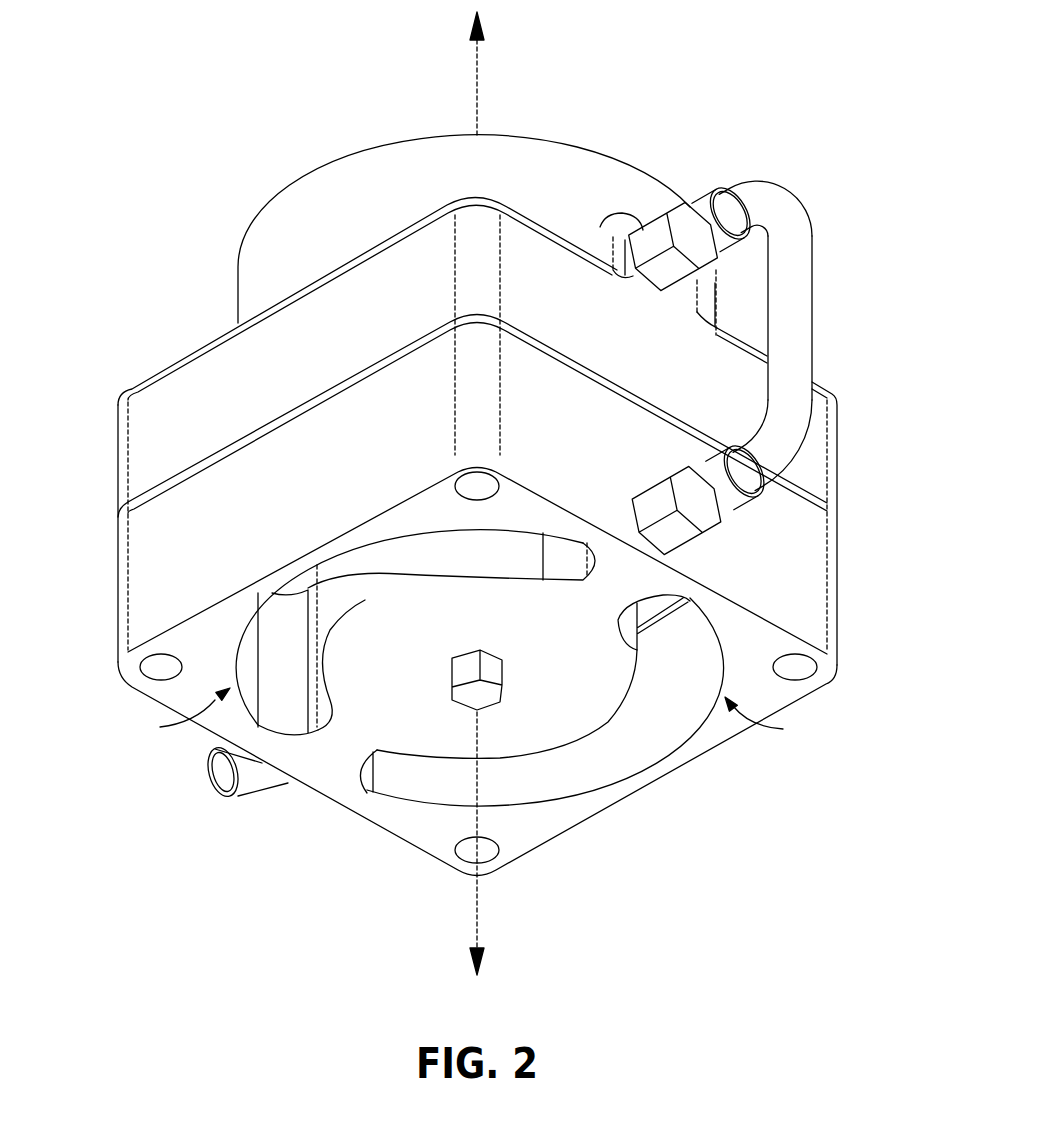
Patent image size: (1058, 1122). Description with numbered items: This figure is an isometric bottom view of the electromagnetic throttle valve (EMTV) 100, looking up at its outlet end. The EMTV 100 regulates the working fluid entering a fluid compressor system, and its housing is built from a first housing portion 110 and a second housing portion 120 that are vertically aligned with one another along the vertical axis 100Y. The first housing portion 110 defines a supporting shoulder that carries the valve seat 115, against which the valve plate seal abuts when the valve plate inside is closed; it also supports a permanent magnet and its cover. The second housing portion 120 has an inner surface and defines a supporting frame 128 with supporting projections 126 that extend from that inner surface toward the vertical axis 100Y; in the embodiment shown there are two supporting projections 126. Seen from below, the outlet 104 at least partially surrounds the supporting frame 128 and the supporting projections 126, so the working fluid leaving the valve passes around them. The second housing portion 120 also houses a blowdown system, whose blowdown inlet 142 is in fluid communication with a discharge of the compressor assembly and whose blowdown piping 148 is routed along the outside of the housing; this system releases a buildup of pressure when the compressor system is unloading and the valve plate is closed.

The electromagnetic throttle valve (EMTV) 100 is at (838, 108).
The vertical axis 100Y is at (478, 78).
The outlet 104 is at (471, 717).
The first housing portion 110 is at (834, 450).
The valve seat 115 is at (833, 509).
The second housing portion 120 is at (833, 582).
The supporting projections 126 is at (332, 760).
The supporting frame 128 is at (355, 573).
The blowdown inlet 142 is at (243, 775).
The blowdown piping 148 is at (799, 318).